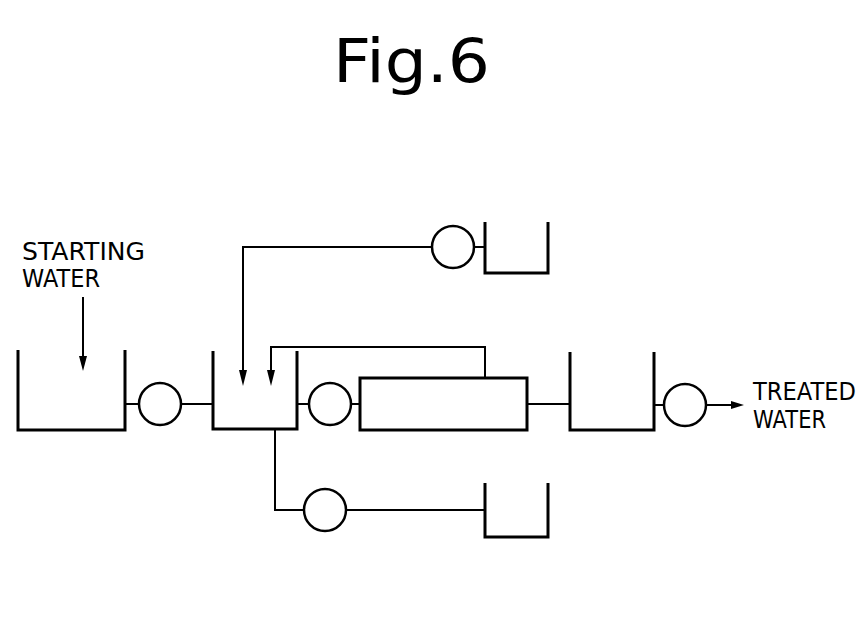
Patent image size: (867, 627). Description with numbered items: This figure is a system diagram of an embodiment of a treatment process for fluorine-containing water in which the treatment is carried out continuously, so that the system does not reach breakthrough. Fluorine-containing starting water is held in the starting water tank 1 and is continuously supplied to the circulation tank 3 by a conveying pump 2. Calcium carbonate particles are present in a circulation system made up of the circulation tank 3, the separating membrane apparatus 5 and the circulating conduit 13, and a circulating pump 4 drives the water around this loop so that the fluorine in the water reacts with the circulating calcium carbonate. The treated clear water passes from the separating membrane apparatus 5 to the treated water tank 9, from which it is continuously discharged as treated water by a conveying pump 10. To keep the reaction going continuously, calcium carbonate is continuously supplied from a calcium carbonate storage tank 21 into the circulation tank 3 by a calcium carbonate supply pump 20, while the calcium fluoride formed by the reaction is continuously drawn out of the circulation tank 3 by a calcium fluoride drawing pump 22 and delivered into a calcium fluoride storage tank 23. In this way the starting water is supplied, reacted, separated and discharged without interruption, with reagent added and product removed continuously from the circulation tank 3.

The starting water tank 1 is at (63, 431).
The conveying pump 2 is at (158, 426).
The circulation tank 3 is at (234, 431).
The circulating pump 4 is at (328, 426).
The separating membrane apparatus 5 is at (405, 432).
The treated water tank 9 is at (625, 432).
The conveying pump 10 is at (685, 427).
The circulating conduit 13 is at (350, 348).
The calcium carbonate supply pump 20 is at (453, 269).
The calcium carbonate storage tank 21 is at (520, 275).
The calcium fluoride drawing pump 22 is at (325, 532).
The calcium fluoride storage tank 23 is at (550, 518).